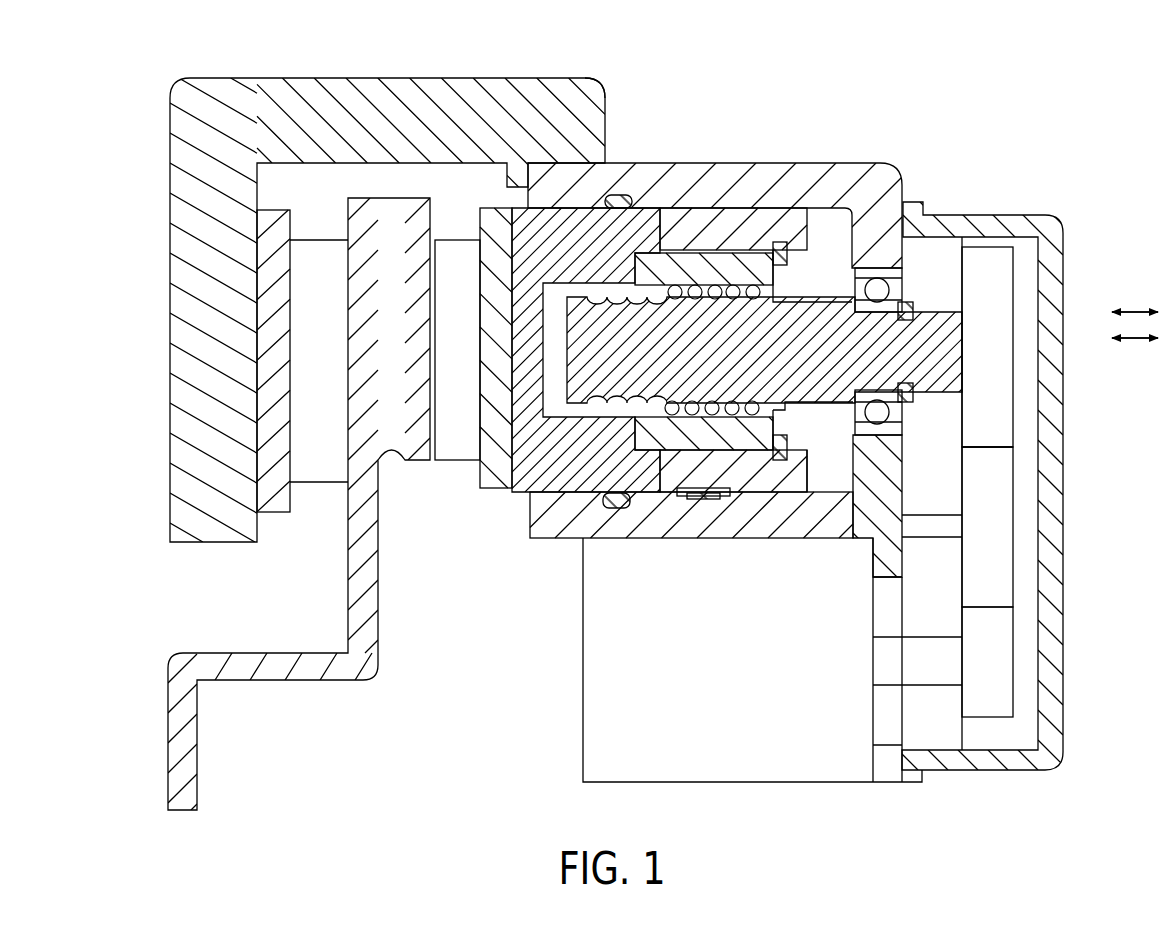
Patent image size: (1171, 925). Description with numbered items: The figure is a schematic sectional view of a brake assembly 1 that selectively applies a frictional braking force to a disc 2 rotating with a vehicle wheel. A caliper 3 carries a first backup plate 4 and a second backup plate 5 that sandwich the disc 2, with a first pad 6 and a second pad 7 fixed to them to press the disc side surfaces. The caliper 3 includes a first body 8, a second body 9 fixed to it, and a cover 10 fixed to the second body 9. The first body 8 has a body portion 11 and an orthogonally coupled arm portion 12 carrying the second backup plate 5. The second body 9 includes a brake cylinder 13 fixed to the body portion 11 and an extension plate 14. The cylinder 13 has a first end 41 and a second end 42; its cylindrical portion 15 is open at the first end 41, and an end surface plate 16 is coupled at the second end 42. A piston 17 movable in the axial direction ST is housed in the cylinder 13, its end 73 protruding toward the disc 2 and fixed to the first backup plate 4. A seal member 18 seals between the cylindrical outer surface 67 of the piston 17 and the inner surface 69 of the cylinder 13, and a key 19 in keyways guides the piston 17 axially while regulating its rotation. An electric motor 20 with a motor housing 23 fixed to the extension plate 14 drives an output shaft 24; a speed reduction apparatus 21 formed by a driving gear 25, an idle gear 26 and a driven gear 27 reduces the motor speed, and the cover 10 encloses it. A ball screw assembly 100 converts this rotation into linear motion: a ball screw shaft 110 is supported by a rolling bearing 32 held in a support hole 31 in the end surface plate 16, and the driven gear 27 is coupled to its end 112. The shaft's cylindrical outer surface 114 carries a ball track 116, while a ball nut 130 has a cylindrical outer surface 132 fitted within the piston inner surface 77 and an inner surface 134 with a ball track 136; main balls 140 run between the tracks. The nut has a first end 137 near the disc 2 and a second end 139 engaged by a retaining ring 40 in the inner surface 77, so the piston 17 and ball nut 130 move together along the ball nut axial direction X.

The brake assembly 1 is at (955, 162).
The disc 2 is at (390, 216).
The caliper 3 is at (569, 75).
The first backup plate 4 is at (492, 217).
The second backup plate 5 is at (273, 213).
The first pad 6 is at (450, 248).
The second pad 7 is at (320, 247).
The first body 8 is at (424, 76).
The second body 9 is at (700, 128).
The cover 10 is at (1030, 213).
The body portion 11 is at (313, 85).
The arm portion 12 is at (172, 480).
The brake cylinder 13 is at (799, 152).
The extension plate 14 is at (885, 770).
The cylindrical portion 15 is at (726, 165).
The end surface plate 16 is at (880, 250).
The piston 17 is at (659, 262).
The seal member 18 is at (613, 508).
The key 19 is at (708, 520).
The electric motor 20 is at (775, 792).
The speed reduction apparatus 21 is at (1036, 450).
The motor housing 23 is at (617, 770).
The output shaft 24 is at (922, 665).
The driving gear 25 is at (1000, 655).
The idle gear 26 is at (1000, 580).
The driven gear 27 is at (1000, 410).
The support hole 31 is at (900, 428).
The rolling bearing 32 is at (877, 290).
The retaining ring 40 is at (790, 440).
The first end 41 is at (600, 138).
The second end 42 is at (800, 262).
The cylindrical outer surface 67 is at (700, 500).
The inner surface 69 is at (652, 500).
The end 73 is at (515, 472).
The inner surface 77 is at (613, 402).
The ball screw assembly 100 is at (760, 455).
The ball screw shaft 110 is at (868, 270).
The end 112 is at (933, 310).
The cylindrical outer surface 114 is at (600, 405).
The ball track 116 is at (612, 420).
The ball nut 130 is at (766, 240).
The cylindrical outer surface 132 is at (738, 256).
The inner surface 134 is at (772, 405).
The ball track 136 is at (758, 412).
The first end 137 is at (658, 196).
The second end 139 is at (835, 285).
The main balls 140 is at (782, 284).
The axial direction ST is at (1132, 312).
The ball nut axial direction X is at (1132, 338).